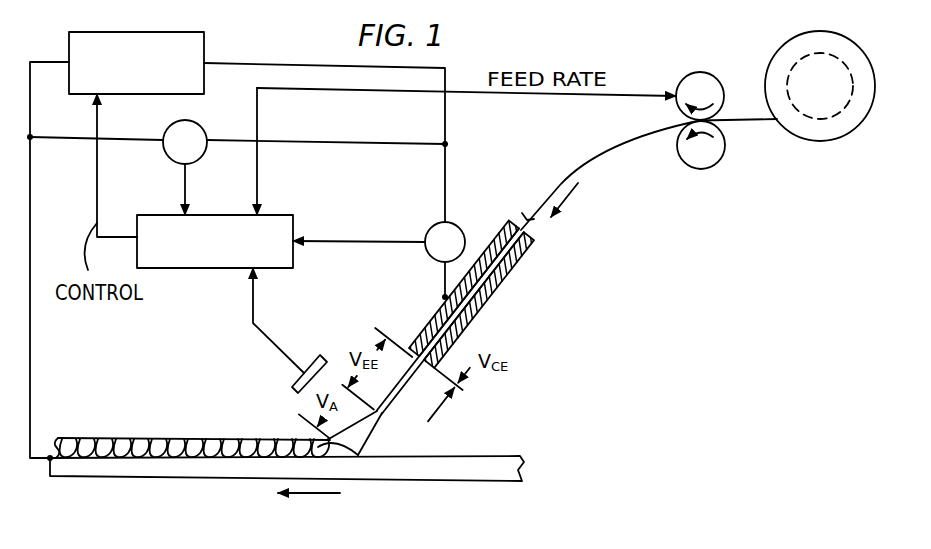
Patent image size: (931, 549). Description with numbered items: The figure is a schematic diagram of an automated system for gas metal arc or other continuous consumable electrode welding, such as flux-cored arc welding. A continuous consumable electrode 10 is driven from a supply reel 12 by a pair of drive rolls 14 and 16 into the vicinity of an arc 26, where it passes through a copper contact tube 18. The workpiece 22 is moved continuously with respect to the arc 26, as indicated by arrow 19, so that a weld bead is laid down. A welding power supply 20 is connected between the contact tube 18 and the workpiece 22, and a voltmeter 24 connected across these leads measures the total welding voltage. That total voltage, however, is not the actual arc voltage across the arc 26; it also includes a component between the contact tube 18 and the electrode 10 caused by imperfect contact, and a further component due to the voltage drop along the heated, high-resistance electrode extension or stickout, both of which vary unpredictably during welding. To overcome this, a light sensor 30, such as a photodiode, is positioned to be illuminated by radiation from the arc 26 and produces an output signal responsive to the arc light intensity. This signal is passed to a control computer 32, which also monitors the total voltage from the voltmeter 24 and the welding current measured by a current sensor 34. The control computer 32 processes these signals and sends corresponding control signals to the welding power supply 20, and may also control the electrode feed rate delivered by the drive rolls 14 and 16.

The continuous consumable electrode 10 is at (598, 155).
The supply reel 12 is at (776, 52).
The drive roll 14 is at (692, 72).
The drive roll 16 is at (706, 169).
The copper contact tube 18 is at (507, 278).
The arrow 19 is at (320, 497).
The welding power supply 20 is at (203, 33).
The workpiece 22 is at (142, 478).
The voltmeter 24 is at (200, 126).
The arc 26 is at (380, 440).
The light sensor 30 is at (292, 379).
The control computer 32 is at (205, 268).
The current sensor 34 is at (432, 226).